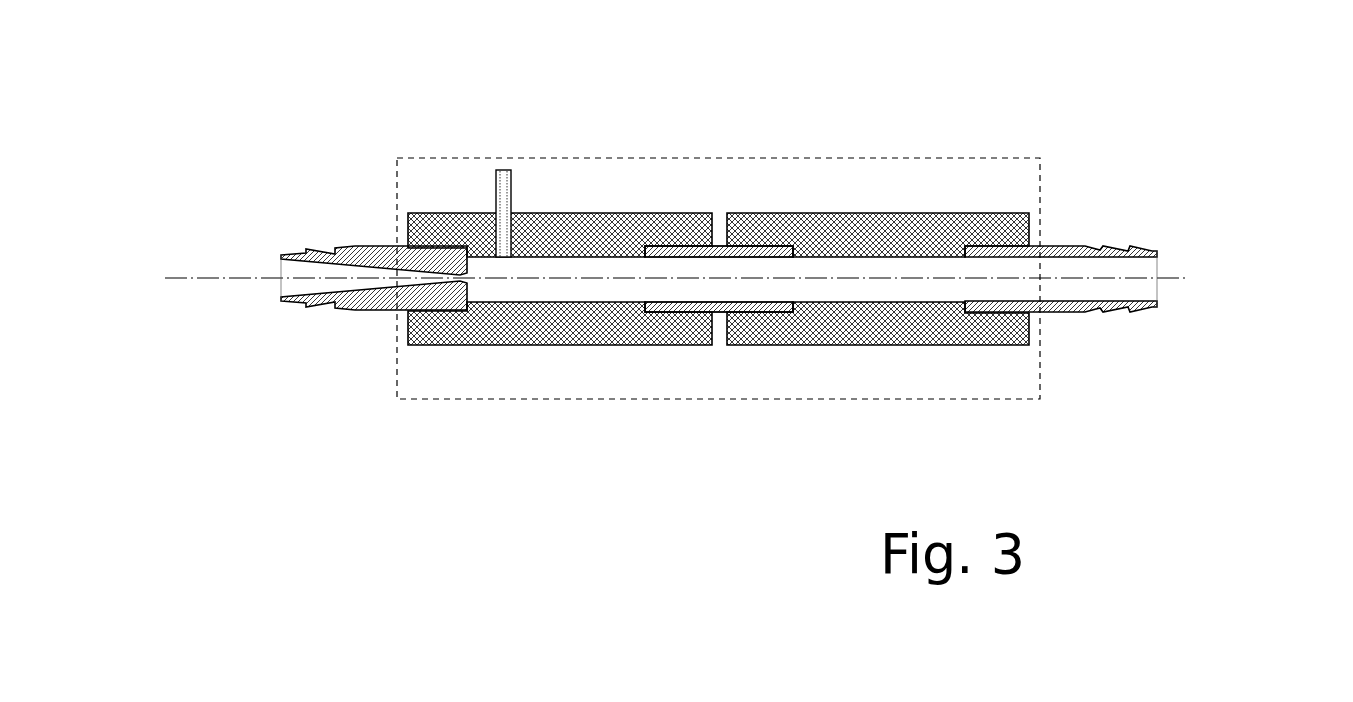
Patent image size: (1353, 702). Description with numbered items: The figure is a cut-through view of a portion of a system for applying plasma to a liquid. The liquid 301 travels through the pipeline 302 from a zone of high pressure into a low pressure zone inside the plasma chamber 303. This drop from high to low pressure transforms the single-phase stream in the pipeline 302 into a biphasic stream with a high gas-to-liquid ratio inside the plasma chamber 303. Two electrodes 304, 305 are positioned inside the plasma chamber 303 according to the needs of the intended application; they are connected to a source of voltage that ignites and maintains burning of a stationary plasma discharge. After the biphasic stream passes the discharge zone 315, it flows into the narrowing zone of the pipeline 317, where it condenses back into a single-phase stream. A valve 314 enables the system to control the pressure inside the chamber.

The liquid 301 is at (675, 280).
The pipeline 302 is at (315, 253).
The plasma chamber 303 is at (662, 213).
The electrode 304 is at (460, 293).
The electrode 305 is at (987, 303).
The valve 314 is at (507, 172).
The discharge zone 315 is at (1040, 158).
The pipeline 317 is at (1118, 245).